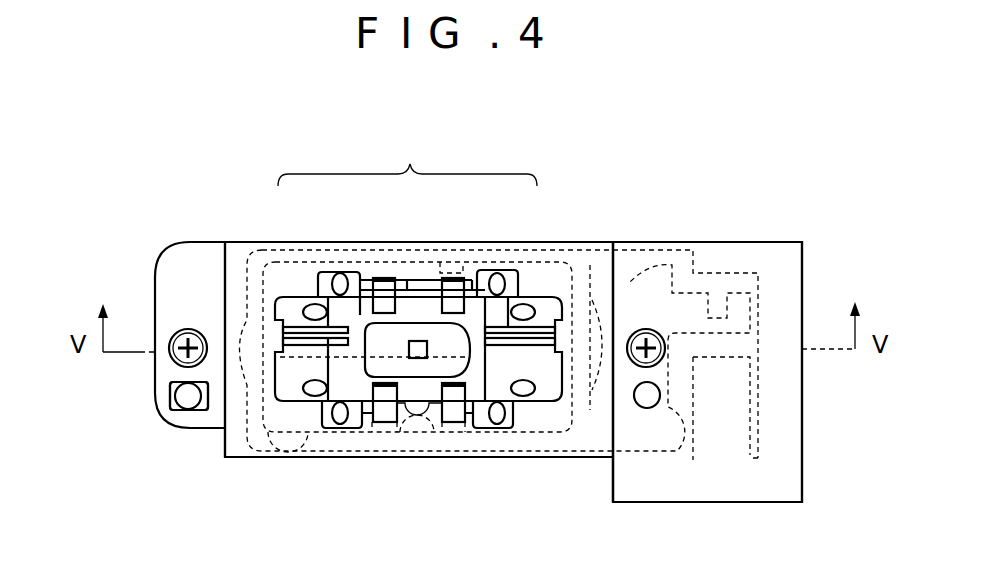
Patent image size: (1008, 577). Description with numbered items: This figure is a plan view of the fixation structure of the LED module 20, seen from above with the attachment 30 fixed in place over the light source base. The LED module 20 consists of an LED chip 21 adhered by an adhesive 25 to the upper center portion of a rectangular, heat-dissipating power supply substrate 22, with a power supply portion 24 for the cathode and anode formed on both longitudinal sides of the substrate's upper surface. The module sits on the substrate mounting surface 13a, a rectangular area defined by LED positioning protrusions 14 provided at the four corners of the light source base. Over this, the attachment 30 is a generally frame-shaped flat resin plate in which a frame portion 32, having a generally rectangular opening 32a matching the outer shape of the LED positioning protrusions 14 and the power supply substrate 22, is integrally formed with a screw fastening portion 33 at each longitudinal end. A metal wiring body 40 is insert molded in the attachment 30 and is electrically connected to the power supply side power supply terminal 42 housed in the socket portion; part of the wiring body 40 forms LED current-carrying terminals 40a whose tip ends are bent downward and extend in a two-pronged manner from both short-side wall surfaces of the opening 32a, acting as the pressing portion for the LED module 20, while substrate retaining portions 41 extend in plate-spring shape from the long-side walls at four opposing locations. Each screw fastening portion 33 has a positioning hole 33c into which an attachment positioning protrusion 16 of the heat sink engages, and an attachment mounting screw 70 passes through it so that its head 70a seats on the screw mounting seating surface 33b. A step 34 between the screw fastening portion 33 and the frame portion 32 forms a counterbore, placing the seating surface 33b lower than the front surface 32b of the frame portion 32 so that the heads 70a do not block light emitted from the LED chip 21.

The attachment 30 is at (752, 178).
The screw fastening portion 33 is at (182, 237).
The step 34 is at (223, 283).
The attachment mounting screw 70 is at (406, 449).
The head of attachment mounting screw 70a is at (171, 355).
The attachment positioning protrusion 16 is at (187, 398).
The screw mounting seating surface 33b is at (170, 392).
The positioning hole 33c is at (176, 404).
The wiring body 40 is at (225, 302).
The power supply side power supply terminal 42 is at (762, 396).
The frame portion 32 is at (438, 332).
The front surface of frame portion 32b is at (557, 273).
The opening 32a is at (293, 380).
The substrate mounting surface 13a is at (247, 442).
The LED module 20 is at (407, 160).
The power supply portion 24 is at (340, 297).
The LED positioning protrusion 14 is at (312, 305).
The power supply substrate 22 is at (454, 300).
The substrate retaining portion 41 is at (383, 392).
The adhesive 25 is at (388, 337).
The LED chip 21 is at (416, 341).
The LED current-carrying terminal 40a is at (342, 348).